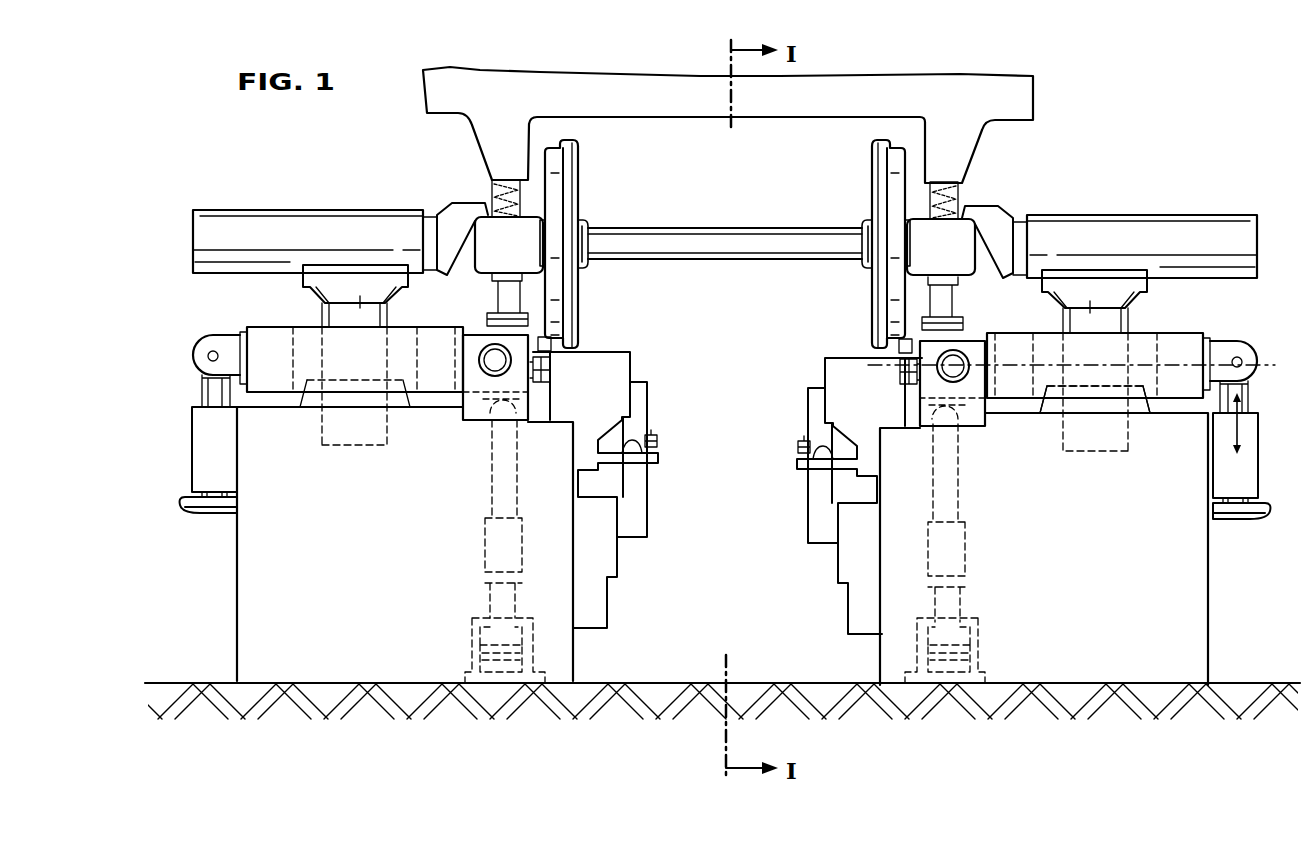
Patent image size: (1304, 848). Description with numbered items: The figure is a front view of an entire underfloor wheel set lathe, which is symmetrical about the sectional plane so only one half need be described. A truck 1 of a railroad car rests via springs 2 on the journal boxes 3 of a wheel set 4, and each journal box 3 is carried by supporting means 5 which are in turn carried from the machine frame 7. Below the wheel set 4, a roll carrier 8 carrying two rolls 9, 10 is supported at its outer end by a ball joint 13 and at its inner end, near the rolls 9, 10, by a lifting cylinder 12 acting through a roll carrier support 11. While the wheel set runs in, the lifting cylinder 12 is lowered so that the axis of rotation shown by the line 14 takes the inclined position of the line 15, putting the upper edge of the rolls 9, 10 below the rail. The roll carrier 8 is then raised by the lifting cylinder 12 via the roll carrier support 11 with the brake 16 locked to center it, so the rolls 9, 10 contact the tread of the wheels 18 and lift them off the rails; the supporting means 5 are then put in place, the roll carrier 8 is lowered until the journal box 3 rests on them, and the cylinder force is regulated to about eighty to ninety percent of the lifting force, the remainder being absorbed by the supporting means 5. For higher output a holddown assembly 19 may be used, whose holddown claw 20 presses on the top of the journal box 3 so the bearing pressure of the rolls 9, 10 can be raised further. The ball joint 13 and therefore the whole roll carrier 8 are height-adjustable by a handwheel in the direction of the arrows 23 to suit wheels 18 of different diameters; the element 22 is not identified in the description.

The truck 1 is at (1017, 97).
The springs 2 is at (490, 197).
The journal box 3 is at (500, 258).
The wheel set 4 is at (824, 216).
The supporting means 5 is at (947, 300).
The machine frame 7 is at (1076, 527).
The roll carrier 8 is at (1176, 342).
The roll 9 is at (879, 389).
The roll 10 is at (906, 385).
The roll carrier support 11 is at (947, 488).
The lifting cylinder 12 is at (947, 640).
The ball joint 13 is at (1240, 360).
The line 14 is at (1017, 353).
The line 15 is at (1022, 410).
The brake 16 is at (900, 366).
The wheel 18 is at (882, 283).
The holddown assembly 19 is at (1117, 237).
The holddown claw 20 is at (997, 217).
The support foot 22 is at (1263, 517).
The arrows 23 is at (1257, 428).